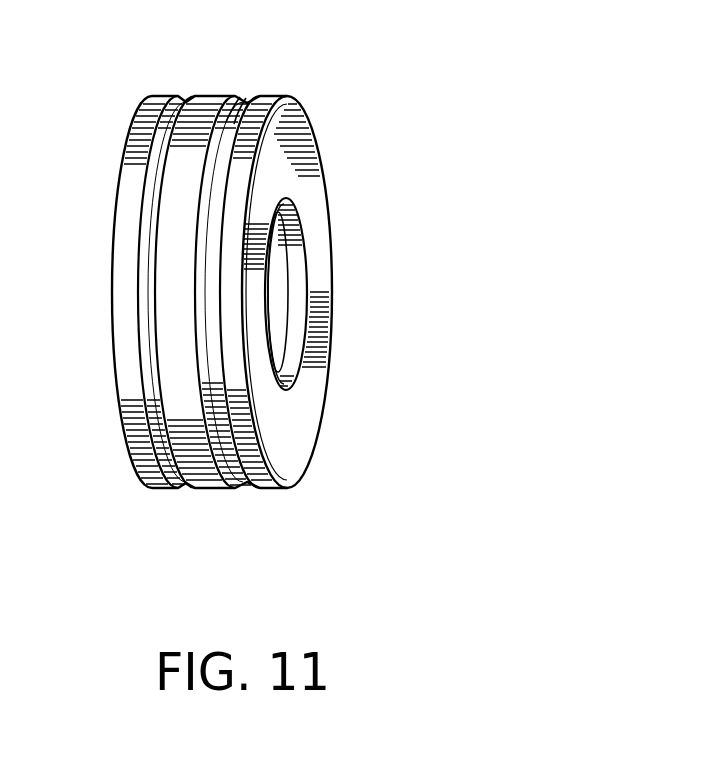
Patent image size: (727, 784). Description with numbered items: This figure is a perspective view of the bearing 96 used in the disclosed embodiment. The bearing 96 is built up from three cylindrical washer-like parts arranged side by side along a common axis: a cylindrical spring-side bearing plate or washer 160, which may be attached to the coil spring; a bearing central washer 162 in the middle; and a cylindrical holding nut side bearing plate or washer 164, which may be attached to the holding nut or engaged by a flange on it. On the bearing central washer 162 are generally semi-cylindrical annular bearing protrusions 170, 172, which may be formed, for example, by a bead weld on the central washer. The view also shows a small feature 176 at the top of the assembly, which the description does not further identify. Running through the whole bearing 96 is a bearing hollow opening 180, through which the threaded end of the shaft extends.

The bearing 96 is at (231, 307).
The spring-side bearing plate or washer 160 is at (268, 477).
The bearing central washer 162 is at (268, 285).
The holding nut side bearing plate or washer 164 is at (153, 478).
The semi-cylindrical annular bearing protrusion 170 is at (277, 348).
The semi-cylindrical annular bearing protrusion 172 is at (160, 410).
The notch 176 is at (238, 97).
The bearing hollow opening 180 is at (295, 323).